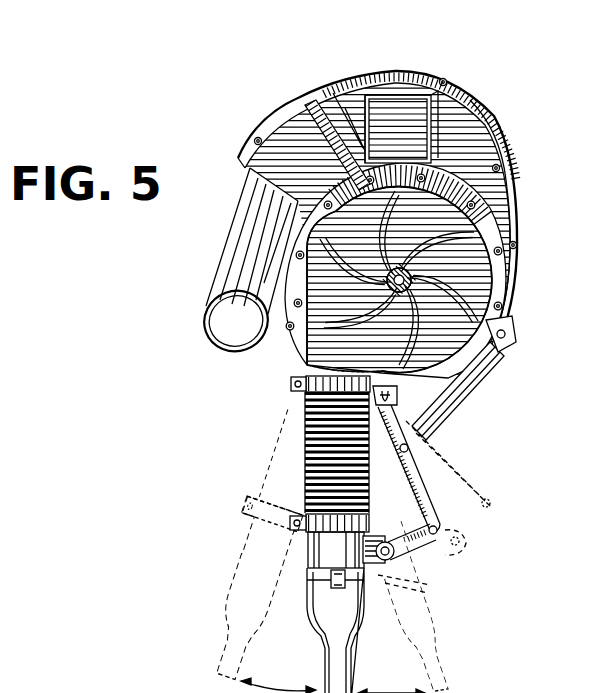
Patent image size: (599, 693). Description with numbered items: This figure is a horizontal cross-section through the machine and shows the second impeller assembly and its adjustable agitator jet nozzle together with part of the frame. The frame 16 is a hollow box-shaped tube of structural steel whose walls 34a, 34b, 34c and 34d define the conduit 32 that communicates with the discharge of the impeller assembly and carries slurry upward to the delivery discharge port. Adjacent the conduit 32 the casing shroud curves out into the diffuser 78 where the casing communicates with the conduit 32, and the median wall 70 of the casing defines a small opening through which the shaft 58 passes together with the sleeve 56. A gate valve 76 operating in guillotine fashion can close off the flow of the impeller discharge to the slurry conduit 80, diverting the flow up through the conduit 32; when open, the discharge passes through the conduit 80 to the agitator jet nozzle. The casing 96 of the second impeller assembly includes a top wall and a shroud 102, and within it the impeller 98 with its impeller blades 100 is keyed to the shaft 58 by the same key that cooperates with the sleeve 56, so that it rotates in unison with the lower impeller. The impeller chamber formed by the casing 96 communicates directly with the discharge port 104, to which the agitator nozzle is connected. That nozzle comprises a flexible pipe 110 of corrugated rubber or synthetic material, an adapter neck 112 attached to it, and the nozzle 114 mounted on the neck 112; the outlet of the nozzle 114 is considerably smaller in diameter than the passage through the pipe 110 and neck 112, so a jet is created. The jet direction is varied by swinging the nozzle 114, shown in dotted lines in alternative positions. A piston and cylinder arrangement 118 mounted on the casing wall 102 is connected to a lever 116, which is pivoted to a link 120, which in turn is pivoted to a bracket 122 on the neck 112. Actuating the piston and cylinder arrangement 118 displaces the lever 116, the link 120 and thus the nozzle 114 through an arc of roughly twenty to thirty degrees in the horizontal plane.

The frame 16 is at (302, 97).
The conduit 32 is at (373, 70).
The wall 34a is at (401, 120).
The wall 34b is at (432, 150).
The wall 34c is at (420, 100).
The wall 34d is at (347, 118).
The sleeve 56 is at (474, 345).
The shaft 58 is at (452, 362).
The median wall 70 is at (478, 283).
The gate valve 76 is at (297, 115).
The diffuser 78 is at (480, 148).
The slurry conduit 80 is at (200, 270).
The casing 96 is at (292, 338).
The impeller 98 is at (444, 257).
The impeller blades 100 is at (464, 218).
The shroud 102 is at (492, 267).
The discharge port 104 is at (295, 382).
The flexible pipe 110 is at (297, 437).
The adapter neck 112 is at (313, 543).
The nozzle 114 is at (313, 623).
The lever 116 is at (434, 515).
The piston and cylinder arrangement 118 is at (494, 334).
The link 120 is at (400, 538).
The bracket 122 is at (380, 550).